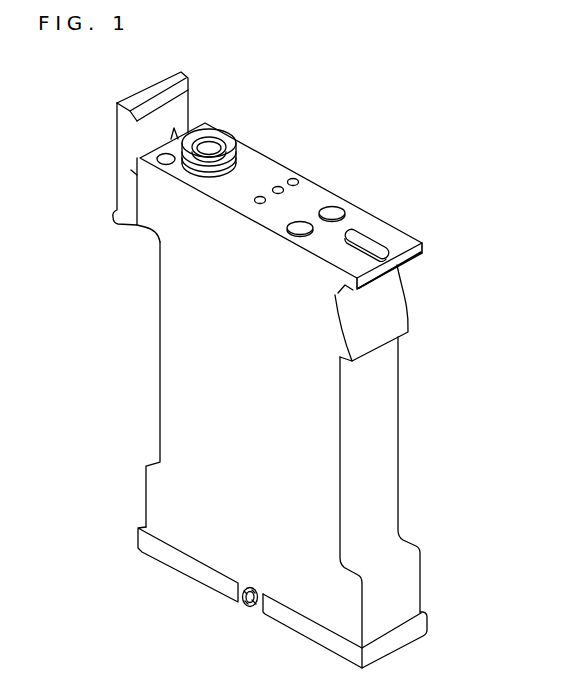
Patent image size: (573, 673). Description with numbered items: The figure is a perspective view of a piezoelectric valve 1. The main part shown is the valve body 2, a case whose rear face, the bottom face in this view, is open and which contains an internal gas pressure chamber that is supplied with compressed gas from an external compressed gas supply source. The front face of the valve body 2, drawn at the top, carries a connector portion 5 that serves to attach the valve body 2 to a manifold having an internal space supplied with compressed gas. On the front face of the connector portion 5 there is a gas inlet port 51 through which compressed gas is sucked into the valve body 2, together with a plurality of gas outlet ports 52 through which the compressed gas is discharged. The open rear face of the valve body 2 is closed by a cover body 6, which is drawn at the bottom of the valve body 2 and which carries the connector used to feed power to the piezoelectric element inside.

The piezoelectric valve 1 is at (503, 108).
The valve body 2 is at (190, 377).
The connector portion 5 is at (383, 233).
The gas inlet port 51 is at (213, 148).
The gas outlet ports 52 is at (297, 180).
The cover body 6 is at (181, 562).